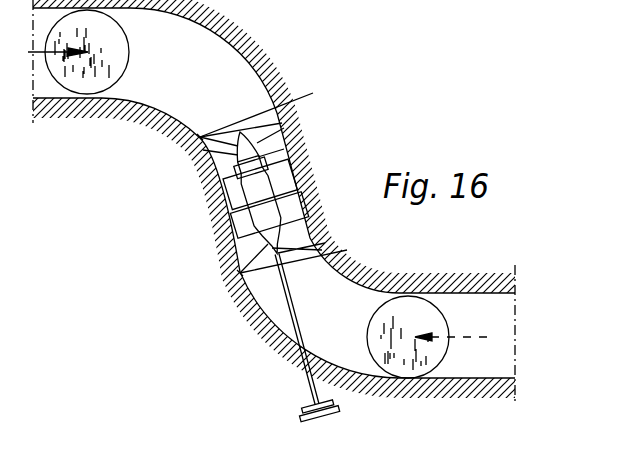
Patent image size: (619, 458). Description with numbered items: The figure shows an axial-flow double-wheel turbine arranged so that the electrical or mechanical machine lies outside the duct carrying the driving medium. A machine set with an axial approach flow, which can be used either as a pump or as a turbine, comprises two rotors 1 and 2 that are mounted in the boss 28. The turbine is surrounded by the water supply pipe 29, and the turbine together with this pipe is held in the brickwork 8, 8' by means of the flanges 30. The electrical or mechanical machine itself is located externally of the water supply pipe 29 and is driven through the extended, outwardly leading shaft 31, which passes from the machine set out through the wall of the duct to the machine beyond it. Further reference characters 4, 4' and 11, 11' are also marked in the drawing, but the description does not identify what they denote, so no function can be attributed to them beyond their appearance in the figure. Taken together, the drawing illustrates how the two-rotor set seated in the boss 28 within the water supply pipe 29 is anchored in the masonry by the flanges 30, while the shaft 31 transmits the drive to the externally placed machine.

The rotor 1 is at (249, 173).
The rotor 2 is at (247, 167).
The upper mounting strut 4 is at (246, 138).
The lower mounting strut 4' is at (289, 255).
The brickwork 8 is at (274, 248).
The brickwork 8' is at (274, 146).
The flow direction 11 is at (78, 52).
The flow direction (reverse) 11' is at (427, 337).
The boss 28 is at (298, 222).
The water supply pipe 29 is at (292, 176).
The flanges 30 is at (196, 141).
The shaft 31 is at (297, 331).